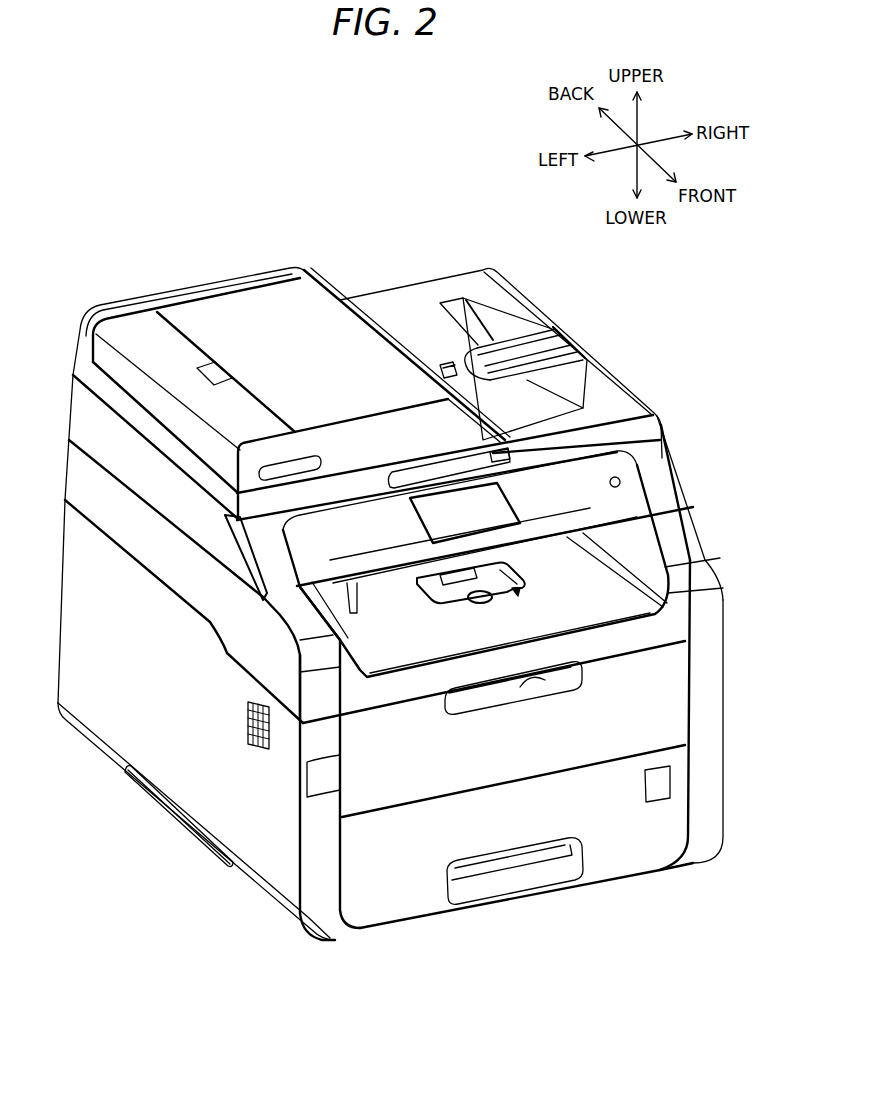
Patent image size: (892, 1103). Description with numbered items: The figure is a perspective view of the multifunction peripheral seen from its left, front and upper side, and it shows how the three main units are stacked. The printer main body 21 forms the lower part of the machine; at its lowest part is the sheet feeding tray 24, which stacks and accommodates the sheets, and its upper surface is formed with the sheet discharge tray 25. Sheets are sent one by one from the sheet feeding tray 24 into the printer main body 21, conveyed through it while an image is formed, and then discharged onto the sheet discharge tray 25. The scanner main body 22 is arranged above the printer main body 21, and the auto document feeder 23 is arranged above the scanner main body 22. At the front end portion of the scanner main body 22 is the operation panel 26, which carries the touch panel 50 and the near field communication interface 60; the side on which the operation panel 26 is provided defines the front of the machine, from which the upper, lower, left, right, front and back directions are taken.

The printer main body 21 is at (173, 777).
The scanner main body 22 is at (75, 413).
The auto document feeder (ADF) 23 is at (251, 282).
The sheet feeding tray 24 is at (638, 857).
The sheet discharge tray 25 is at (632, 612).
The operation panel 26 is at (507, 557).
The touch panel 50 is at (478, 525).
The near field communication (NFC) interface 60 is at (378, 542).